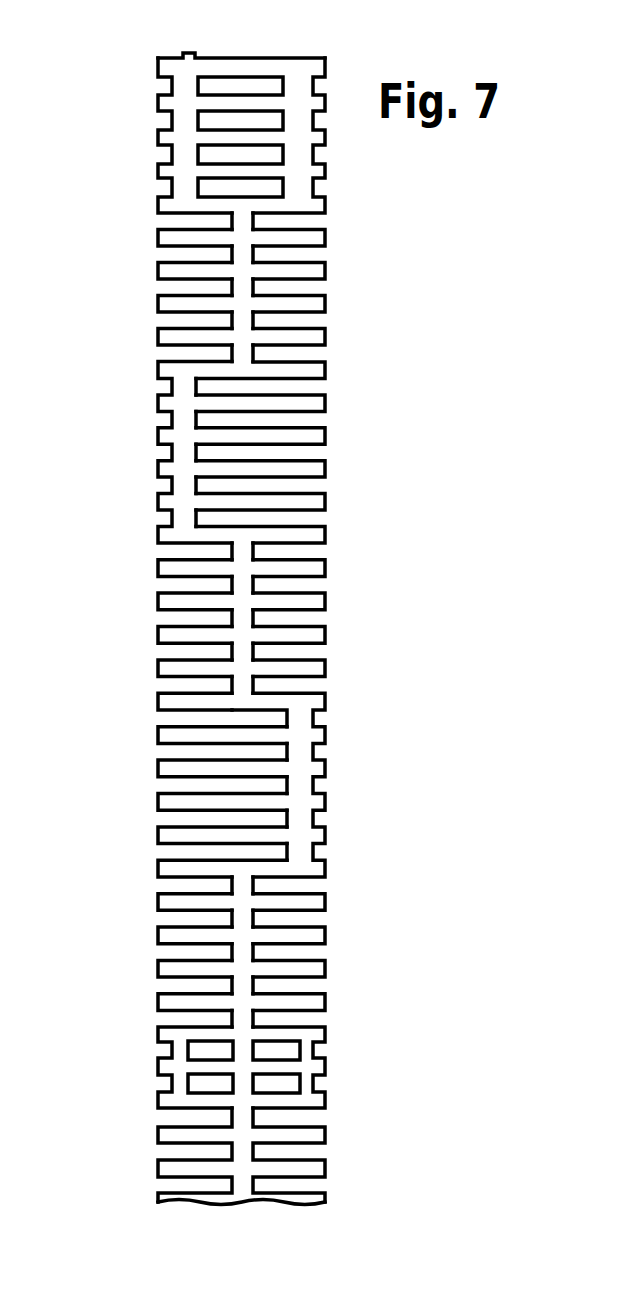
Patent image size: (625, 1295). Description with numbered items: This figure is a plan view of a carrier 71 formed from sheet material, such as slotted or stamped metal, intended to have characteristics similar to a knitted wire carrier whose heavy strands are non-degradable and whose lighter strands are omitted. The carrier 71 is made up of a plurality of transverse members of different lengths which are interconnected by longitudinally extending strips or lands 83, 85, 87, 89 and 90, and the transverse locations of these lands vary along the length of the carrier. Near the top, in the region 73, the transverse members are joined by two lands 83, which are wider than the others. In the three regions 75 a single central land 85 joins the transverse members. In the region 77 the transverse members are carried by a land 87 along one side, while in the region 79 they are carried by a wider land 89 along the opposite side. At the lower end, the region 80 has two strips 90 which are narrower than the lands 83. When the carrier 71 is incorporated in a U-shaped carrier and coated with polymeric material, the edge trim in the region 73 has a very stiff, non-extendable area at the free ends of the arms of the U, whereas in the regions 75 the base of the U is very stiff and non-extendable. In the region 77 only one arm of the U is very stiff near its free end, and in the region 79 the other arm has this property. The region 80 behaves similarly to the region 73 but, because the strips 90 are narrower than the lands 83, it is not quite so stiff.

The carrier 71 is at (284, 63).
The region 73 is at (122, 67).
The regions 75 is at (122, 238).
The region 77 is at (122, 365).
The region 79 is at (122, 710).
The region 80 is at (370, 1028).
The lands 83 is at (185, 120).
The land 85 is at (243, 287).
The land 87 is at (180, 478).
The land 89 is at (302, 800).
The strips 90 is at (307, 1055).